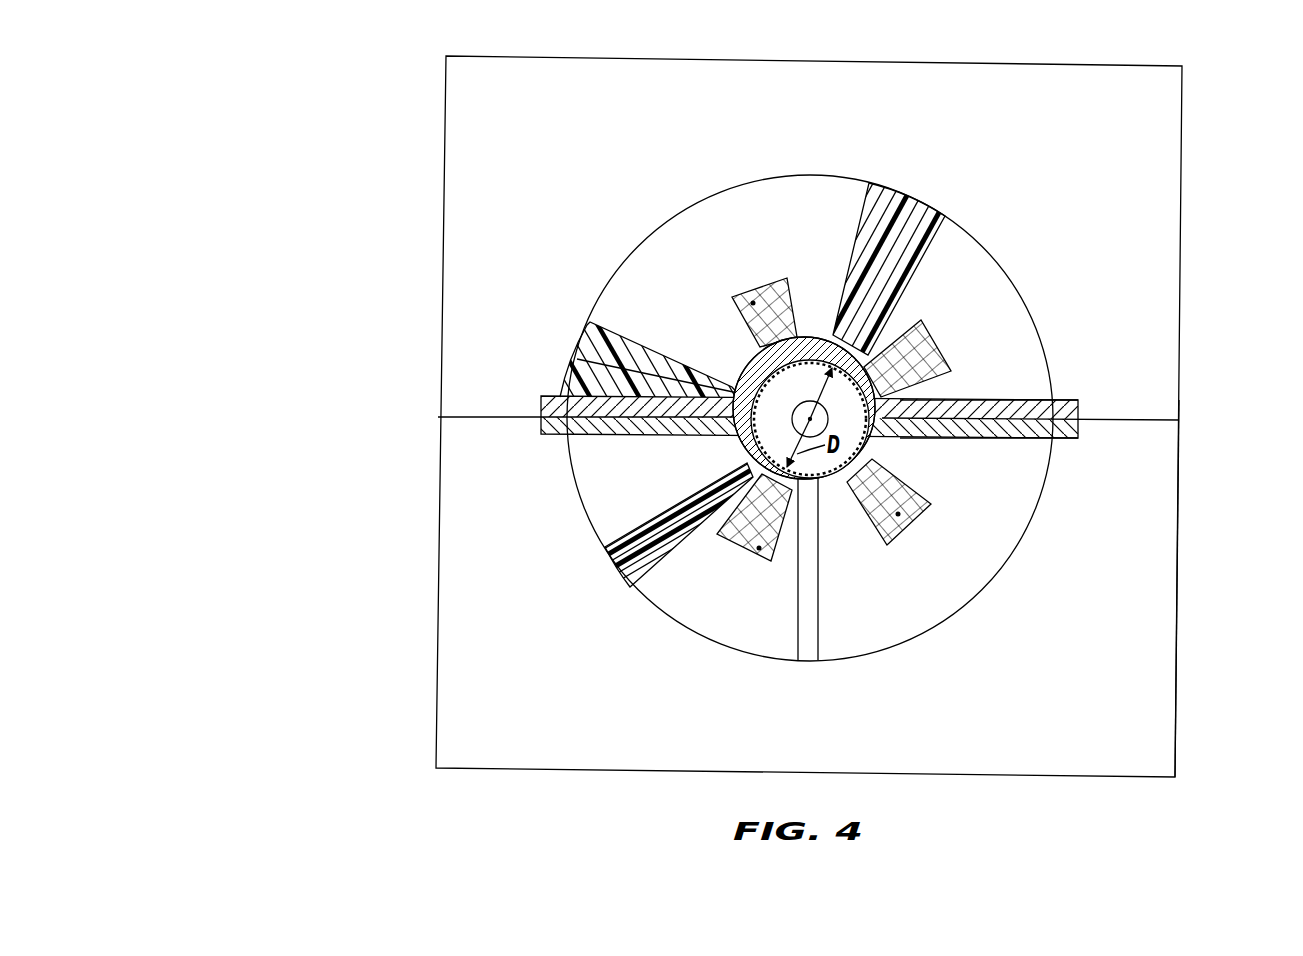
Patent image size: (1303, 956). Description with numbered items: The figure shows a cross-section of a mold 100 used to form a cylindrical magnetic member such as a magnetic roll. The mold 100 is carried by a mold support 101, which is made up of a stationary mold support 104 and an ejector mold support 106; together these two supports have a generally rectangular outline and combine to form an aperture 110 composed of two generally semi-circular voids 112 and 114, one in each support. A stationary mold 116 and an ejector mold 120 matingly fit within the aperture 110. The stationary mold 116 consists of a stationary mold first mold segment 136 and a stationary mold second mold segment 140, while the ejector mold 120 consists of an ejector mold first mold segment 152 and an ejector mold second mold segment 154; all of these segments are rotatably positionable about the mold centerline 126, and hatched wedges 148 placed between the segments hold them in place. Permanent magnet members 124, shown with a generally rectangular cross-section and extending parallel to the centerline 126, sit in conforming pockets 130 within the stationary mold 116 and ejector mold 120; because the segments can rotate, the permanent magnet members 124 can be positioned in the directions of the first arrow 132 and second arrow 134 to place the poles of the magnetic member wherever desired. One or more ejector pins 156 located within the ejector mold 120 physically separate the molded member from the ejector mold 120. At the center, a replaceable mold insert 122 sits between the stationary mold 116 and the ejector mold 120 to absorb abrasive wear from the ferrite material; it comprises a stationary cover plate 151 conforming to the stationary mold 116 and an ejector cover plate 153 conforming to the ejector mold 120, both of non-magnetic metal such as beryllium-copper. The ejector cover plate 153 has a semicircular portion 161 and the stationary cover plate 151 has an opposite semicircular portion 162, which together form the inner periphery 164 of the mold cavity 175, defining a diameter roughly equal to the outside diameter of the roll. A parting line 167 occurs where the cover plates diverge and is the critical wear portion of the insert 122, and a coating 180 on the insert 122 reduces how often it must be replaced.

The mold 100 is at (330, 140).
The mold support 101 is at (1210, 245).
The stationary mold support 104 is at (1182, 175).
The ejector mold support 106 is at (1178, 608).
The aperture 110 is at (825, 174).
The semi-circular void 112 is at (723, 212).
The semi-circular void 114 is at (708, 624).
The stationary mold 116 is at (1097, 314).
The ejector mold 120 is at (957, 613).
The mold insert 122 is at (537, 442).
The permanent magnet members 124 is at (771, 277).
The mold centerline 126 is at (776, 366).
The pockets 130 is at (755, 305).
The first arrow 132 is at (893, 118).
The second arrow 134 is at (973, 152).
The stationary mold first mold segment 136 is at (640, 295).
The stationary mold second mold segment 140 is at (986, 283).
The wedges 148 is at (915, 206).
The stationary cover plate 151 is at (1078, 402).
The ejector mold first mold segment 152 is at (602, 506).
The ejector cover plate 153 is at (1078, 436).
The ejector mold second mold segment 154 is at (873, 617).
The ejector pins 156 is at (808, 655).
The semicircular portion 161 is at (878, 458).
The semicircular portion 162 is at (878, 342).
The inner periphery 164 is at (801, 378).
The parting line 167 is at (757, 437).
The mold cavity 175 is at (821, 482).
The coating 180 is at (870, 426).